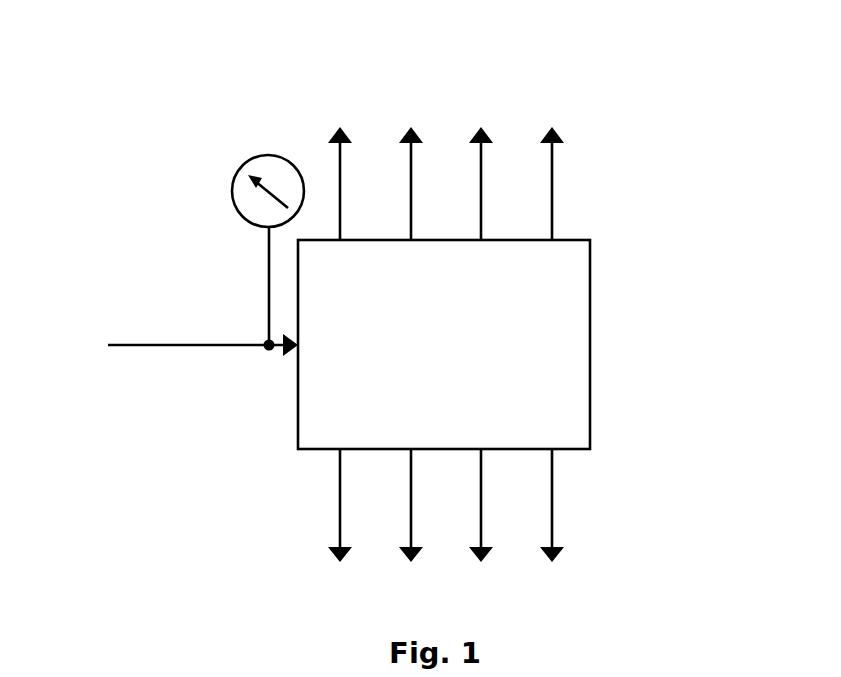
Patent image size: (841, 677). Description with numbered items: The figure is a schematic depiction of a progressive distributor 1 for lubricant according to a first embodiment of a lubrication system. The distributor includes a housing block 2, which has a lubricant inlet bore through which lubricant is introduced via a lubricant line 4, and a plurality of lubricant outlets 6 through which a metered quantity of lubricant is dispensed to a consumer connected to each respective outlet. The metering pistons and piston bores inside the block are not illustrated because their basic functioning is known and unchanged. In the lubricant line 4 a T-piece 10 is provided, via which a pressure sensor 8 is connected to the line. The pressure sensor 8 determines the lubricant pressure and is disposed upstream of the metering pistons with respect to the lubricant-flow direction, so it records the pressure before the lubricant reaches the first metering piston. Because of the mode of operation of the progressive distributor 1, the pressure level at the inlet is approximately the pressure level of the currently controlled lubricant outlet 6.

The progressive distributor 1 is at (625, 105).
The housing block 2 is at (575, 348).
The lubricant line 4 is at (146, 347).
The lubricant outlets 6 is at (343, 205).
The pressure sensor 8 is at (233, 189).
The T-piece 10 is at (268, 350).